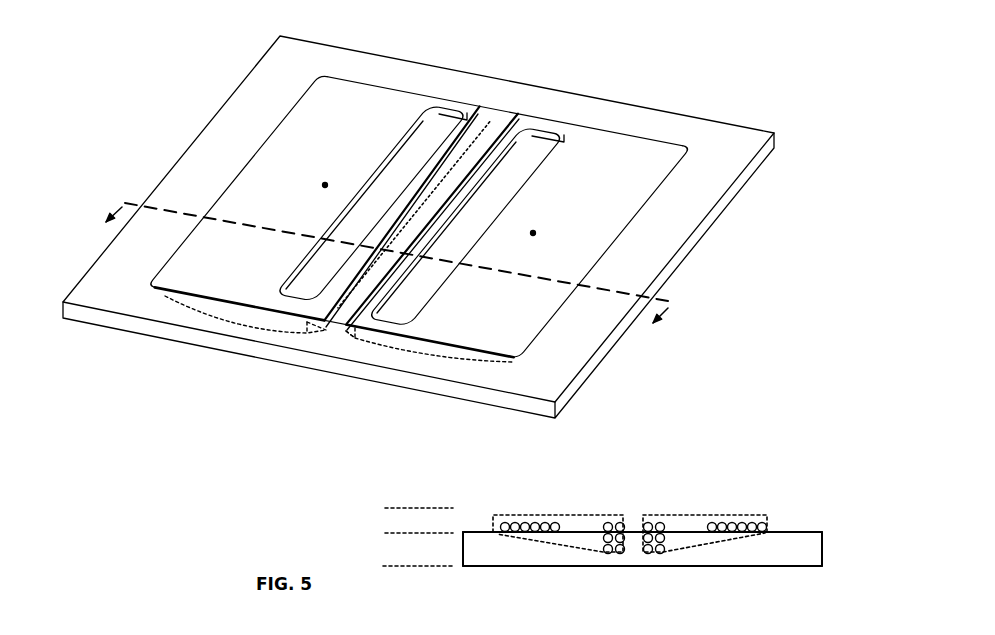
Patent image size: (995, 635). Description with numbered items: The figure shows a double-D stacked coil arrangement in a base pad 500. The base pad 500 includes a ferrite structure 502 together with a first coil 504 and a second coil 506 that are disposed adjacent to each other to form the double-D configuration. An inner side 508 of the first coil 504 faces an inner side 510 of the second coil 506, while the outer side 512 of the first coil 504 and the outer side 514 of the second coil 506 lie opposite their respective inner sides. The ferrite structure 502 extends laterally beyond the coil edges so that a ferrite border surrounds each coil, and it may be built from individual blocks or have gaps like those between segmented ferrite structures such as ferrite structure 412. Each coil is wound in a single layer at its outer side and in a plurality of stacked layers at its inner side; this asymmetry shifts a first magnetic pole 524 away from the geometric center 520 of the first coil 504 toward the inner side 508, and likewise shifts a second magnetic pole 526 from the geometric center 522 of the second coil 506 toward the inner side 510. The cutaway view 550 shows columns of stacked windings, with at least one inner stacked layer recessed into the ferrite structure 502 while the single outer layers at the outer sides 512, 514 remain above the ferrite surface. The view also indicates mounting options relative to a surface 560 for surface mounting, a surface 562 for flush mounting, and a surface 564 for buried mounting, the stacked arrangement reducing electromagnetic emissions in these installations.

The base pad 500 is at (156, 52).
The ferrite structure 502 is at (110, 262).
The first coil 504 is at (583, 515).
The second coil 506 is at (675, 515).
The inner side of the first coil 508 is at (331, 322).
The inner side of the second coil 510 is at (490, 108).
The outer side of the first coil 512 is at (220, 174).
The outer side of the second coil 514 is at (636, 230).
The geometric center of the first coil 520 is at (325, 185).
The geometric center of the second coil 522 is at (533, 233).
The first magnetic pole 524 is at (347, 190).
The second magnetic pole 526 is at (502, 223).
The view 550 is at (780, 475).
The surface 560 is at (383, 566).
The surface 562 is at (385, 533).
The surface 564 is at (385, 508).
The ferrite structure 412 is at (790, 542).